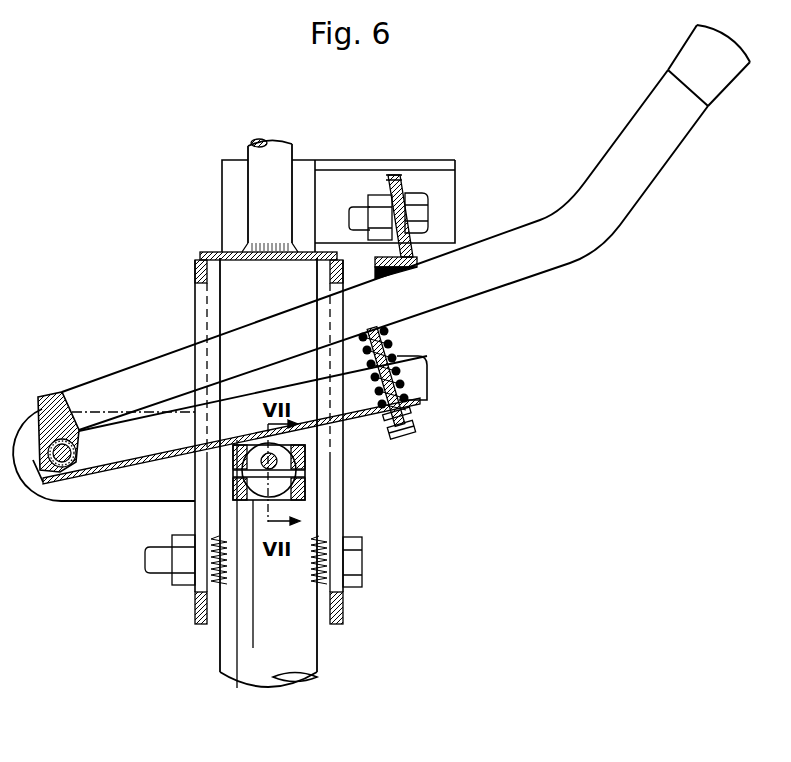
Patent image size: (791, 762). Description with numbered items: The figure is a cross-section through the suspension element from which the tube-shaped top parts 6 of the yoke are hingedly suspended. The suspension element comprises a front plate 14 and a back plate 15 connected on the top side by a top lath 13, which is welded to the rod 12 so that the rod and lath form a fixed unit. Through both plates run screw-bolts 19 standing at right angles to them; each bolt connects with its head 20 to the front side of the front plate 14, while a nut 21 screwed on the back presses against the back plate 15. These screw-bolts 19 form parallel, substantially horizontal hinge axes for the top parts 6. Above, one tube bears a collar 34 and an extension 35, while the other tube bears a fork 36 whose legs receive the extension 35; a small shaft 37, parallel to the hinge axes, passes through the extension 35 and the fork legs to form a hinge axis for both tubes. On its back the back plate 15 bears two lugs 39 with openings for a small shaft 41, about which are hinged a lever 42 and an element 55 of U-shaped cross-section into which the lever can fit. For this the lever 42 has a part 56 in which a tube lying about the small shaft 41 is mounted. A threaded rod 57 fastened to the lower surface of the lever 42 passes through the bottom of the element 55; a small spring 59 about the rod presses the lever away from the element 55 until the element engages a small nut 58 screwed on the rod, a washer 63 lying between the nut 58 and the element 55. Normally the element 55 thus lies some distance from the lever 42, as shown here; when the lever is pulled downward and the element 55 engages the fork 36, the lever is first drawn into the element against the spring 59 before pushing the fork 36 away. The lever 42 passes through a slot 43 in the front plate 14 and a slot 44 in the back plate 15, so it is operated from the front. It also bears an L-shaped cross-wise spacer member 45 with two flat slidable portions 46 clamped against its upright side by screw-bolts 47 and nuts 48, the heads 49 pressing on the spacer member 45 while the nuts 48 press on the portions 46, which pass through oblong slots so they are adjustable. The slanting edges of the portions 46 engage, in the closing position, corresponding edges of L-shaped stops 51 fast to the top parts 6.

The top parts 6 is at (303, 170).
The rod 12 is at (283, 151).
The top lath 13 is at (213, 251).
The front plate 14 is at (345, 610).
The back plate 15 is at (196, 614).
The screw-bolts 19 is at (152, 560).
The head 20 is at (363, 567).
The nut 21 is at (186, 572).
The collar 34 is at (254, 650).
The extension 35 is at (286, 463).
The fork 36 is at (306, 490).
The small shaft 37 is at (235, 470).
The lugs 39 is at (123, 497).
The small shaft 41 is at (49, 484).
The lever 42 is at (617, 206).
The slot 43 is at (338, 513).
The slot 44 is at (197, 302).
The spacer member 45 is at (412, 178).
The slidable portions 46 is at (396, 176).
The screw-bolts 47 is at (363, 207).
The nuts 48 is at (382, 195).
The heads 49 is at (420, 207).
The stops 51 is at (447, 207).
The element 55 is at (88, 478).
The part 56 is at (46, 398).
The threaded rod 57 is at (390, 336).
The small nut 58 is at (416, 426).
The small spring 59 is at (428, 367).
The washer 63 is at (412, 410).